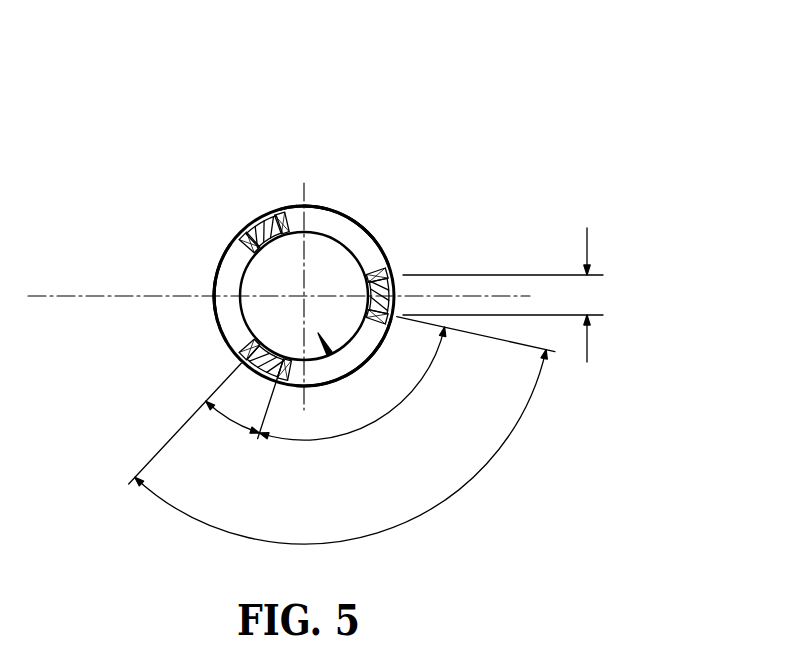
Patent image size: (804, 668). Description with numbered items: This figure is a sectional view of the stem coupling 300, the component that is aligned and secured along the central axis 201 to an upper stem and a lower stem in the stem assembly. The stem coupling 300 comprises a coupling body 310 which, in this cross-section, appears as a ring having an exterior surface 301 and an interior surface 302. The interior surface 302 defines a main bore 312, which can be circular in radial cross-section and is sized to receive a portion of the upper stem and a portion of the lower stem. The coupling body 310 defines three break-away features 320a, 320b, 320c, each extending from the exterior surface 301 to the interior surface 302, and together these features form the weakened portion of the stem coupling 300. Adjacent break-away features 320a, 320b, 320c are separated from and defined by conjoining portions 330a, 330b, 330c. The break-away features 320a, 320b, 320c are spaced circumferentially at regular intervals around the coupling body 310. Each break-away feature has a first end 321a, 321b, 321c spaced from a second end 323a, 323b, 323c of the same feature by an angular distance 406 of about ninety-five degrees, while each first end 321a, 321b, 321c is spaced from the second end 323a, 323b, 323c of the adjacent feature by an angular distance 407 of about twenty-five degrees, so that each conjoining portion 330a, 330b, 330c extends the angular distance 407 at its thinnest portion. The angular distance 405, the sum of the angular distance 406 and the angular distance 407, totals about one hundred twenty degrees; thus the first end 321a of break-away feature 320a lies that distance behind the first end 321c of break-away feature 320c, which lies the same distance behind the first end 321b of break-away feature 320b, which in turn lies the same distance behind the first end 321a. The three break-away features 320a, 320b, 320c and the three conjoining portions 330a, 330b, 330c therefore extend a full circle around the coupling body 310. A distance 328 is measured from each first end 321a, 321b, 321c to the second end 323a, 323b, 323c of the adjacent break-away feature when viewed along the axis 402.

The central axis 201 is at (372, 217).
The stem coupling 300 is at (505, 152).
The exterior surface 301 is at (212, 310).
The interior surface 302 is at (247, 263).
The coupling body 310 is at (322, 207).
The main bore 312 is at (330, 353).
The break-away feature 320a is at (228, 277).
The break-away feature 320b is at (336, 213).
The break-away feature 320c is at (310, 380).
The first end 321a is at (222, 327).
The first end 321b is at (290, 208).
The first end 321c is at (380, 333).
The second end 323a is at (237, 227).
The second end 323b is at (445, 247).
The second end 323c is at (291, 383).
The distance 328 is at (590, 295).
The conjoining portion 330a is at (278, 372).
The conjoining portion 330b is at (272, 212).
The conjoining portion 330c is at (398, 292).
The axis 402 is at (52, 297).
The angular distance 405 is at (368, 537).
The angular distance 406 is at (386, 413).
The angular distance 407 is at (230, 423).